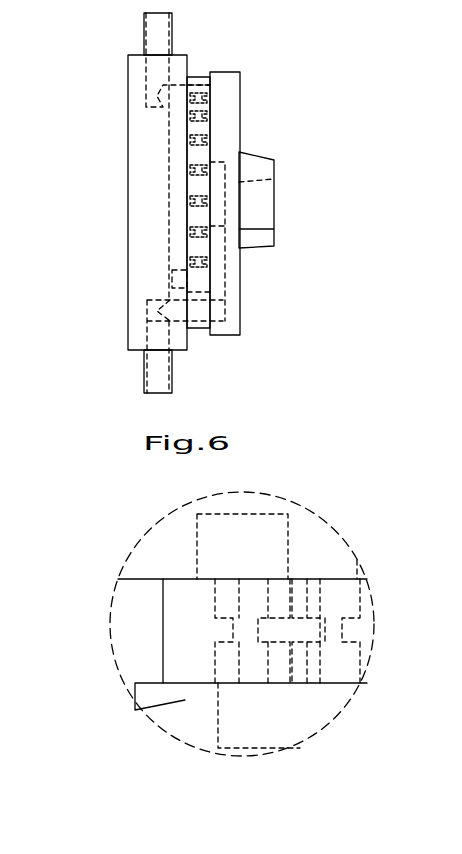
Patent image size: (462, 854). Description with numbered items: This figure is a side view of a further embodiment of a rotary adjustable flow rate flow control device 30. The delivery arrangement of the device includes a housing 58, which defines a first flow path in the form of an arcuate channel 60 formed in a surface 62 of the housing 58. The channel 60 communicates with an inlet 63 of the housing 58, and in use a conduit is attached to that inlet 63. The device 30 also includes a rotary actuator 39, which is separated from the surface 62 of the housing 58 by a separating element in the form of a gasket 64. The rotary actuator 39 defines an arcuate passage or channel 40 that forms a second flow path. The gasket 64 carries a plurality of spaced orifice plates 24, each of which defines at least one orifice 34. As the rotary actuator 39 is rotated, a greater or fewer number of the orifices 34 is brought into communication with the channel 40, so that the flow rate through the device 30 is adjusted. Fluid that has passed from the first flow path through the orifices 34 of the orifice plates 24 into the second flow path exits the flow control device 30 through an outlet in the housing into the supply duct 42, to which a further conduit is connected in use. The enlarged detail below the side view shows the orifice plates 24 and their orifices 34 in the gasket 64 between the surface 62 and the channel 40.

The rotary adjustable flow rate flow control device 30 is at (345, 150).
The orifice plates 24 is at (200, 127).
The orifice 34 is at (335, 622).
The rotary actuator 39 is at (240, 93).
The arcuate passage or channel 40 is at (225, 212).
The supply duct 42 is at (144, 372).
The housing 58 is at (128, 207).
The arcuate channel 60 is at (213, 533).
The surface 62 is at (187, 67).
The inlet 63 is at (144, 32).
The gasket 64 is at (196, 328).